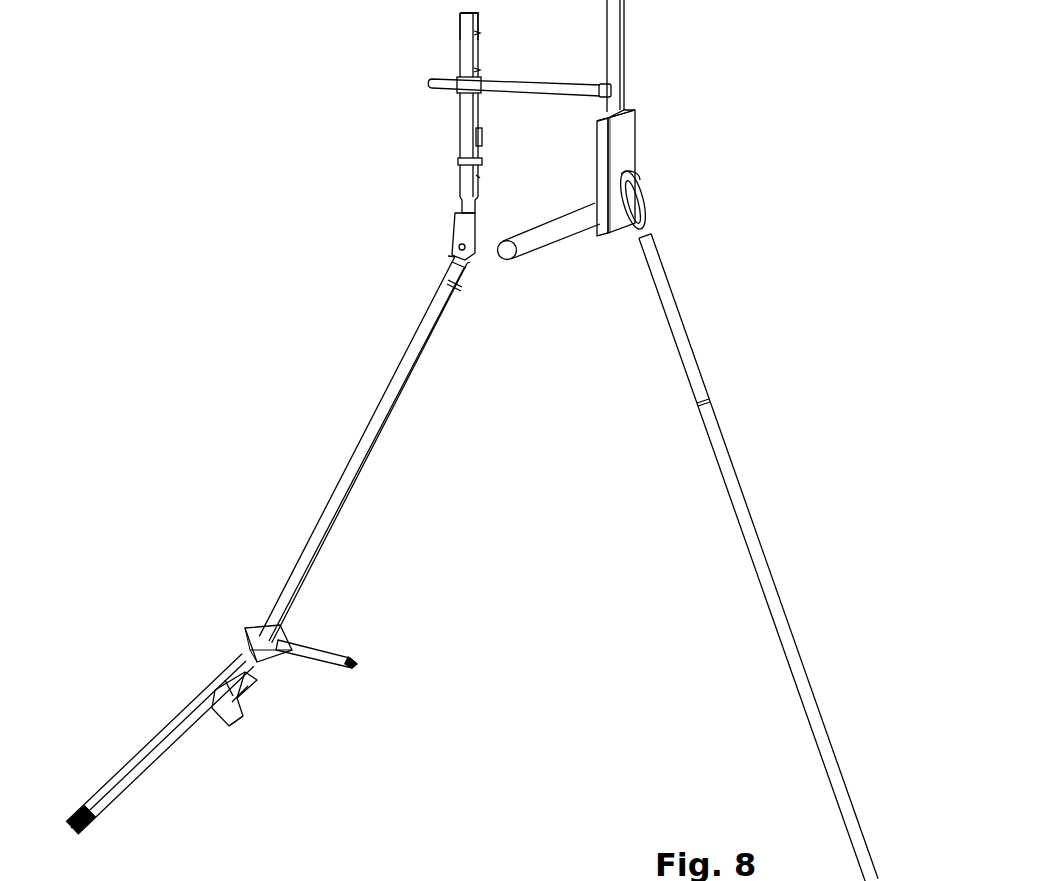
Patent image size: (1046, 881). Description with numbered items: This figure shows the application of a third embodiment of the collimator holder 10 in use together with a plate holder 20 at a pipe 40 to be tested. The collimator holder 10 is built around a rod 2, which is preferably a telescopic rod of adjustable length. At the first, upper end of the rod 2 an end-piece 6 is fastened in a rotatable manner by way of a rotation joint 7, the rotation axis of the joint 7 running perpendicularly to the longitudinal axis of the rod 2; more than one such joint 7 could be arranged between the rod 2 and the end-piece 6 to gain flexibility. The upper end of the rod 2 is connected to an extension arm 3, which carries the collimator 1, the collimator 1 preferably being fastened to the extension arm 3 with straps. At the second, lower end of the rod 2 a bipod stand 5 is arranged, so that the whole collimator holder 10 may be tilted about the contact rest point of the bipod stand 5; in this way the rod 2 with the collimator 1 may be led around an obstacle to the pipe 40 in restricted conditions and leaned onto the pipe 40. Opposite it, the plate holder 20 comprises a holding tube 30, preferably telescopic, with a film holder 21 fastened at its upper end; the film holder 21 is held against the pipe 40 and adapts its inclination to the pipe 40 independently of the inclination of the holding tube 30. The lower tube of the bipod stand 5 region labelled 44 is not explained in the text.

The collimator holder 10 is at (240, 174).
The collimator 1 is at (460, 131).
The end-piece 6 is at (461, 44).
The extension arm 3 is at (529, 80).
The rotation joint 7 is at (458, 248).
The rod 2 is at (350, 450).
The bipod stand 5 is at (200, 604).
The lower tube 44 is at (319, 767).
The pipe 40 is at (627, 11).
The film holder 21 is at (625, 129).
The plate holder 20 is at (744, 186).
The holding tube 30 is at (698, 383).